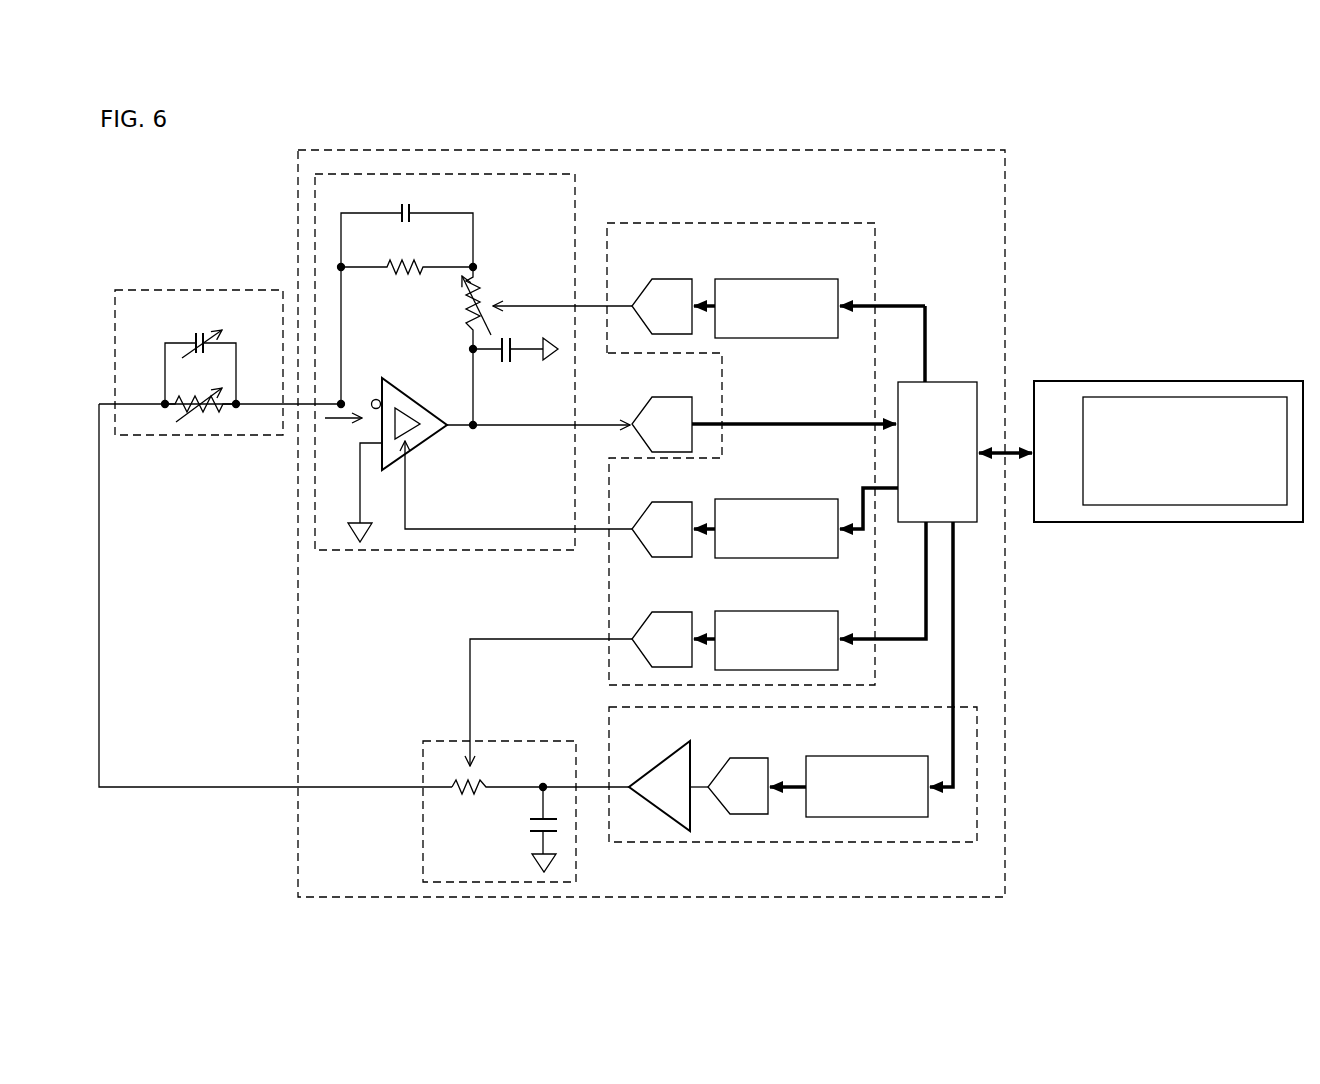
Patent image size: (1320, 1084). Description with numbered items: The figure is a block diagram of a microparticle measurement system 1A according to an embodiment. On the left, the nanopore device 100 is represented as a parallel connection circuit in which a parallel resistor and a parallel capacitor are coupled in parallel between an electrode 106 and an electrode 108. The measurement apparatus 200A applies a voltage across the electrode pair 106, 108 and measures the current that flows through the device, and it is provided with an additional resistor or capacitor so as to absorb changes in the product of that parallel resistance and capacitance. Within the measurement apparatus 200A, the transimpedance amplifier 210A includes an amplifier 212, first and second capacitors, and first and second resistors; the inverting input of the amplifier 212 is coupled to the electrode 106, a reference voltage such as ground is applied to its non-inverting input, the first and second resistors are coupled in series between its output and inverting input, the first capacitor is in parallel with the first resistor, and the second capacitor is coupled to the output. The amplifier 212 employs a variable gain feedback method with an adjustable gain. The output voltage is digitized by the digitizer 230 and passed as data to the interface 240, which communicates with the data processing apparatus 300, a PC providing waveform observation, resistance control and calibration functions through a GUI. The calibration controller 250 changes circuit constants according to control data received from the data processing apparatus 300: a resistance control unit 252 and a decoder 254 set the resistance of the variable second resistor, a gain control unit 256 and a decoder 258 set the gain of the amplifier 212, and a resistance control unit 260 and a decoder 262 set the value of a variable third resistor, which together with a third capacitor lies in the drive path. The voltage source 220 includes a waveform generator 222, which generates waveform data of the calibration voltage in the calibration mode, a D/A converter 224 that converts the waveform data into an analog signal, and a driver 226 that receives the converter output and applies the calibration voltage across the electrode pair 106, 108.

The microparticle measurement system 1A is at (1211, 131).
The nanopore device 100 is at (200, 290).
The electrode 106 is at (278, 398).
The electrode 108 is at (122, 398).
The measurement apparatus 200A is at (900, 128).
The transimpedance amplifier 210A is at (575, 185).
The amplifier 212 is at (425, 371).
The voltage source 220 is at (740, 842).
The waveform generator 222 is at (898, 746).
The D/A converter 224 is at (770, 746).
The driver 226 is at (655, 765).
The digitizer 230 is at (665, 397).
The interface 240 is at (940, 382).
The calibration controller 250 is at (837, 223).
The resistance control unit 252 is at (826, 266).
The decoder 254 is at (683, 266).
The gain control unit 256 is at (826, 487).
The decoder 258 is at (665, 502).
The resistance control unit 260 is at (826, 599).
The decoder 262 is at (683, 599).
The data processing apparatus 300 is at (1185, 381).